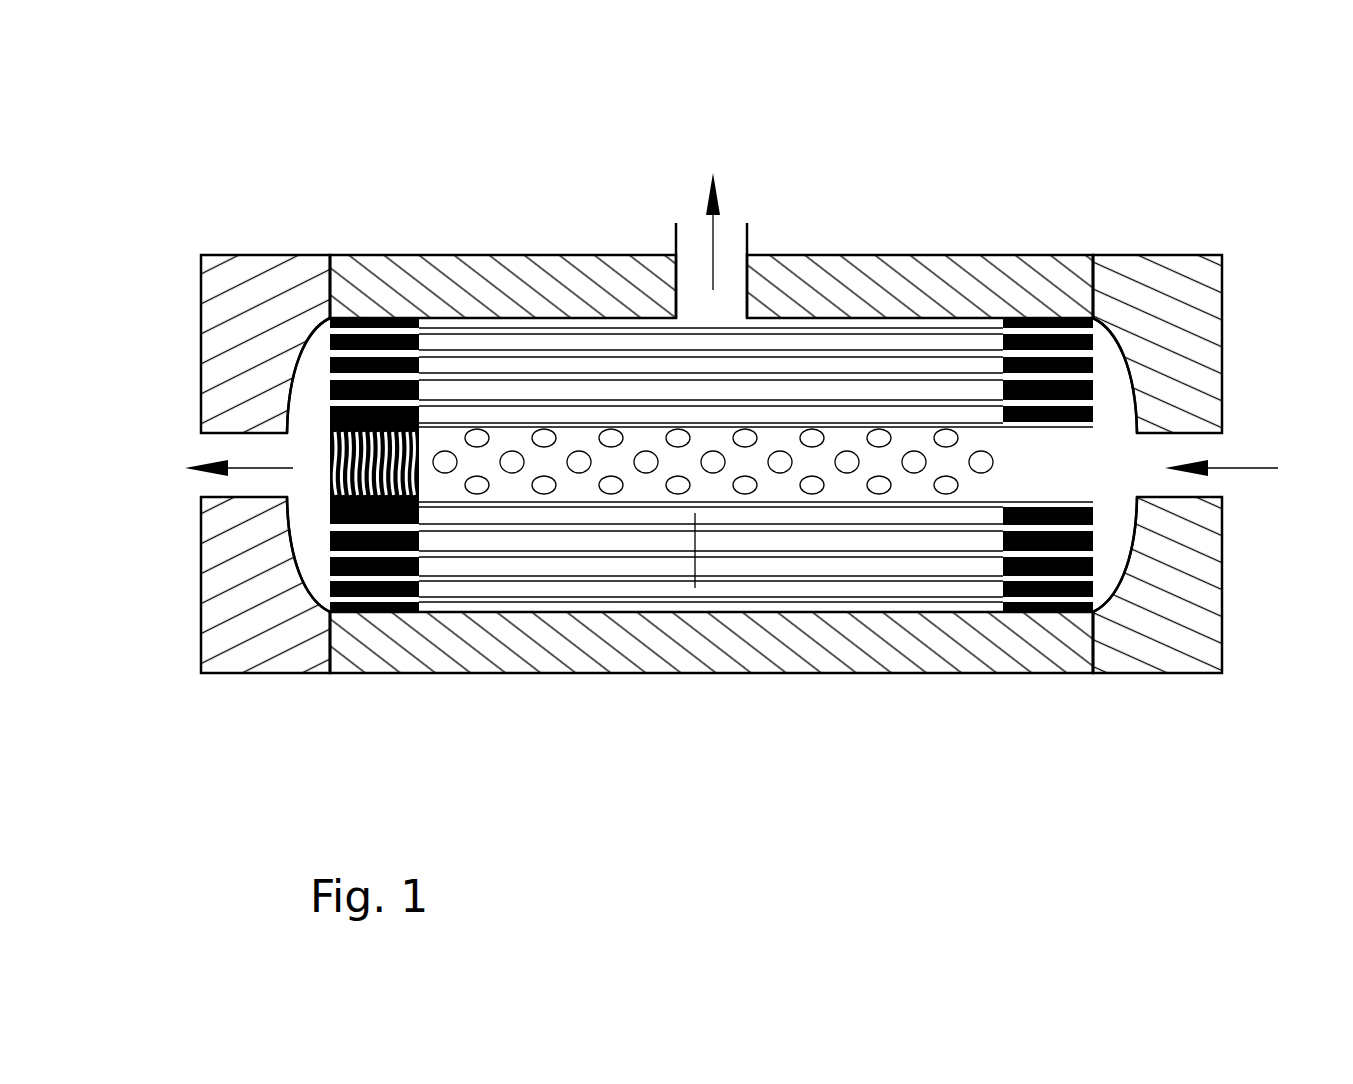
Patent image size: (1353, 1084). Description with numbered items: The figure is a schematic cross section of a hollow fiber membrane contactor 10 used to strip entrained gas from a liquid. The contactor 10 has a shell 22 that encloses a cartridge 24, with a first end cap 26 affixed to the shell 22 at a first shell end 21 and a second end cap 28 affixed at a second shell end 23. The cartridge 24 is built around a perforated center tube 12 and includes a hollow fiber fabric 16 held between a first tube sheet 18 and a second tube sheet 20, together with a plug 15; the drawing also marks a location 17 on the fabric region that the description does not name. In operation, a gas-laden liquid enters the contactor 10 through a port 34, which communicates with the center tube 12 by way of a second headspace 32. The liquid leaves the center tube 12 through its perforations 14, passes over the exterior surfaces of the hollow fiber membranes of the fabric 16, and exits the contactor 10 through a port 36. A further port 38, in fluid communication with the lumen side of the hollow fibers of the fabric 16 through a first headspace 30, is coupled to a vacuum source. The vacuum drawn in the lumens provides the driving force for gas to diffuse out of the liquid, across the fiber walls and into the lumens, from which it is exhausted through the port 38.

The hollow fiber membrane contactor 10 is at (970, 178).
The perforated center tube 12 is at (1012, 478).
The perforations 14 is at (812, 440).
The plug 15 is at (405, 443).
The hollow fiber fabric 16 is at (690, 537).
The plate edge 17 is at (330, 502).
The first tube sheet 18 is at (375, 320).
The second tube sheet 20 is at (1040, 317).
The first shell end 21 is at (328, 300).
The shell 22 is at (573, 255).
The second shell end 23 is at (1094, 287).
The cartridge 24 is at (1095, 798).
The first end cap 26 is at (330, 743).
The second end cap 28 is at (1093, 743).
The first headspace 30 is at (312, 375).
The second headspace 32 is at (1113, 387).
The port 34 is at (1238, 470).
The port 36 is at (714, 216).
The port 38 is at (222, 468).